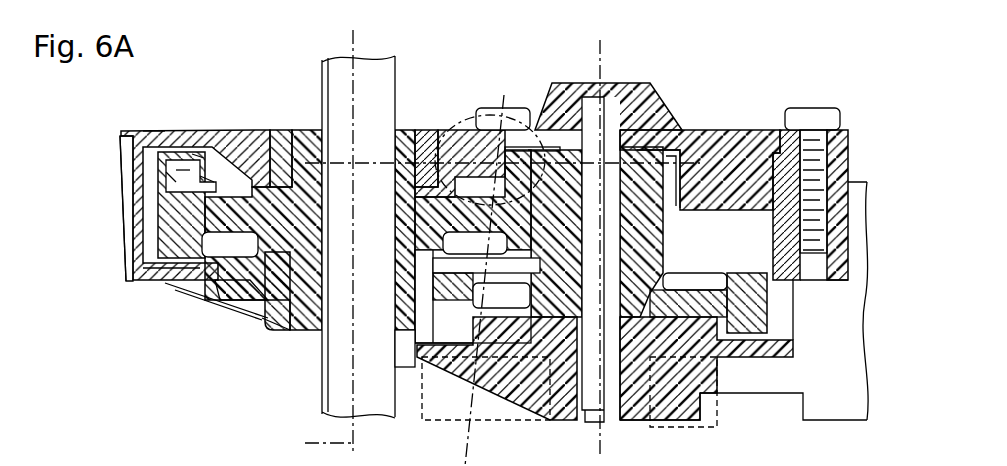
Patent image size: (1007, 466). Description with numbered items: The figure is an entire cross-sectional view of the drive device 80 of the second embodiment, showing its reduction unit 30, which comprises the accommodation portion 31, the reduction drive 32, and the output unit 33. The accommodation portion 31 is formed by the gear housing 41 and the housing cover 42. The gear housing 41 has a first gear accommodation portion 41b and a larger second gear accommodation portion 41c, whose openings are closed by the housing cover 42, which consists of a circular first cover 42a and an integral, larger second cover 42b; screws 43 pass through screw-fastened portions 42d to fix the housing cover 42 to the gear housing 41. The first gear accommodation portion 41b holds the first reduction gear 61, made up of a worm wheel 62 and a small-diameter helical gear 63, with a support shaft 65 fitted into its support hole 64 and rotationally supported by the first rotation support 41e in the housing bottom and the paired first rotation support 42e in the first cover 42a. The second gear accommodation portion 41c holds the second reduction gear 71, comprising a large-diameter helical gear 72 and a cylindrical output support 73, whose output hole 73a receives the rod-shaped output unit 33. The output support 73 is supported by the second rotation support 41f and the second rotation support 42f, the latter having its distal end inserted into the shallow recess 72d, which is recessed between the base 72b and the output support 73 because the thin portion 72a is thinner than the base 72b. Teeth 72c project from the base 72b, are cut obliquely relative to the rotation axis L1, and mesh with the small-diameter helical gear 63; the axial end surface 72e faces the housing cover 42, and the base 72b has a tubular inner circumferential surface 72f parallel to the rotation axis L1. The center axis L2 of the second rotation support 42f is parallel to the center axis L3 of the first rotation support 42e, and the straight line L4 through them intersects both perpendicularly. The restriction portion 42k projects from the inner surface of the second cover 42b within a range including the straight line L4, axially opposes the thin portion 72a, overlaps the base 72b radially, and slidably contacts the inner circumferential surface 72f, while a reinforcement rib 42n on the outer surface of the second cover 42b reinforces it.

The reduction unit 30 is at (675, 111).
The accommodation portion 31 is at (155, 283).
The reduction drive 32 is at (752, 278).
The output unit 33 is at (322, 400).
The gear housing 41 is at (130, 262).
The first gear accommodation portion 41b is at (795, 338).
The second gear accommodation portion 41c is at (137, 241).
The first rotation support 41e is at (636, 400).
The second rotation support 41f is at (265, 335).
The housing cover 42 is at (147, 128).
The first cover 42a is at (742, 135).
The second cover 42b is at (160, 130).
The screw-fastened portion 42d is at (842, 135).
The first rotation support 42e is at (630, 100).
The second rotation support 42f is at (420, 135).
The restriction portion 42k is at (468, 200).
The reinforcement rib 42n is at (452, 140).
The screw 43 is at (505, 100).
The first reduction gear 61 is at (668, 256).
The worm wheel 62 is at (750, 300).
The small-diameter helical gear 63 is at (650, 223).
The support hole 64 is at (597, 236).
The support shaft 65 is at (548, 424).
The second reduction gear 71 is at (412, 348).
The large-diameter helical gear 72 is at (170, 268).
The thin portion 72a is at (268, 310).
The base 72b is at (182, 173).
The teeth 72c is at (173, 177).
The shallow recess 72d is at (207, 180).
The axial end surface 72e is at (198, 157).
The inner circumferential surface 72f is at (243, 163).
The output support 73 is at (303, 135).
The output hole 73a is at (324, 232).
The drive device 80 is at (783, 54).
The rotation axis L1 is at (315, 439).
The center axis L2 is at (357, 38).
The center axis L3 is at (598, 45).
The straight line L4 is at (368, 166).